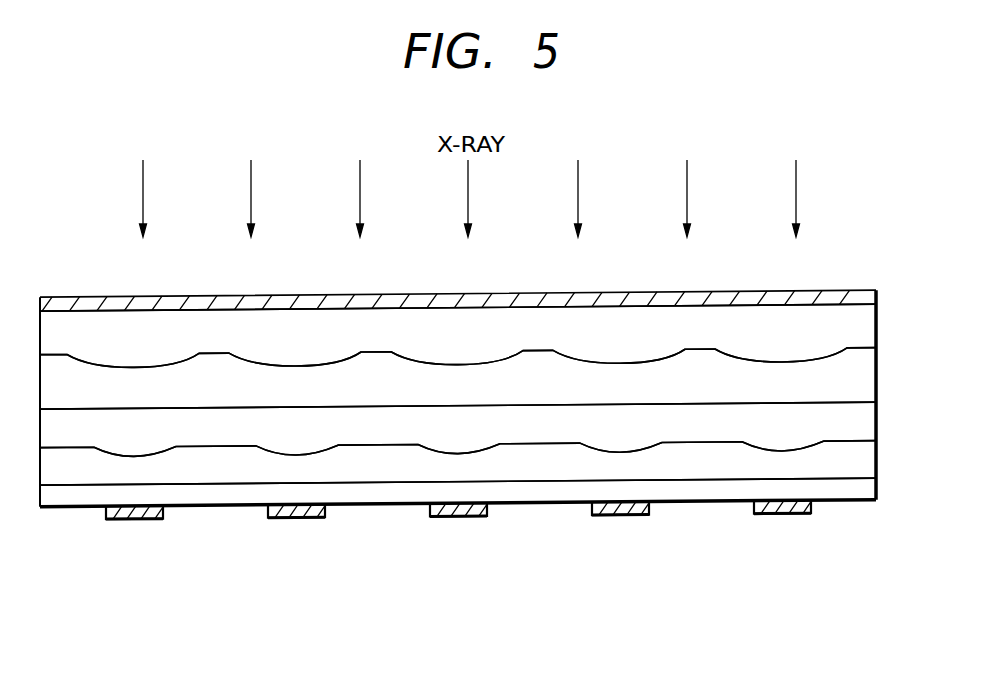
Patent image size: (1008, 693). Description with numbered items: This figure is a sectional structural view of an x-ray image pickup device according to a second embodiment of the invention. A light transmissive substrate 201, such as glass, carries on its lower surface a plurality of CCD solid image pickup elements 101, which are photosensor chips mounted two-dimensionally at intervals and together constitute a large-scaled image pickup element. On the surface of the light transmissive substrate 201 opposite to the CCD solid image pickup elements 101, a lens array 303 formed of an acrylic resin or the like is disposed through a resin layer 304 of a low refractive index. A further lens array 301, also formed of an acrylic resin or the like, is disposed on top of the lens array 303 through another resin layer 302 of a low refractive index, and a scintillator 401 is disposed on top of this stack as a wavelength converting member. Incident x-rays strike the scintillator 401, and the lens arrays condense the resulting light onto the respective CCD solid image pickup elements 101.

The scintillator 401 is at (853, 295).
The lens array 301 is at (865, 325).
The resin layer 302 is at (865, 372).
The lens array 303 is at (865, 426).
The resin layer 304 is at (865, 461).
The light transmissive substrate 201 is at (865, 490).
The CCD solid image pickup elements 101 is at (810, 508).